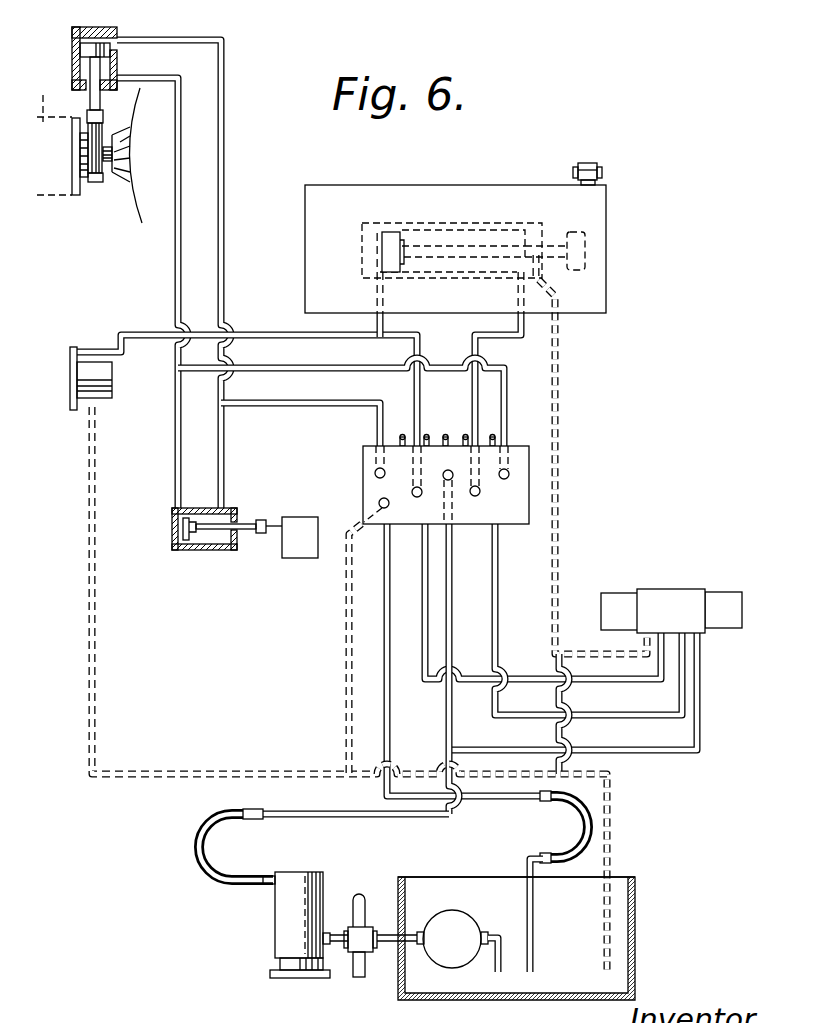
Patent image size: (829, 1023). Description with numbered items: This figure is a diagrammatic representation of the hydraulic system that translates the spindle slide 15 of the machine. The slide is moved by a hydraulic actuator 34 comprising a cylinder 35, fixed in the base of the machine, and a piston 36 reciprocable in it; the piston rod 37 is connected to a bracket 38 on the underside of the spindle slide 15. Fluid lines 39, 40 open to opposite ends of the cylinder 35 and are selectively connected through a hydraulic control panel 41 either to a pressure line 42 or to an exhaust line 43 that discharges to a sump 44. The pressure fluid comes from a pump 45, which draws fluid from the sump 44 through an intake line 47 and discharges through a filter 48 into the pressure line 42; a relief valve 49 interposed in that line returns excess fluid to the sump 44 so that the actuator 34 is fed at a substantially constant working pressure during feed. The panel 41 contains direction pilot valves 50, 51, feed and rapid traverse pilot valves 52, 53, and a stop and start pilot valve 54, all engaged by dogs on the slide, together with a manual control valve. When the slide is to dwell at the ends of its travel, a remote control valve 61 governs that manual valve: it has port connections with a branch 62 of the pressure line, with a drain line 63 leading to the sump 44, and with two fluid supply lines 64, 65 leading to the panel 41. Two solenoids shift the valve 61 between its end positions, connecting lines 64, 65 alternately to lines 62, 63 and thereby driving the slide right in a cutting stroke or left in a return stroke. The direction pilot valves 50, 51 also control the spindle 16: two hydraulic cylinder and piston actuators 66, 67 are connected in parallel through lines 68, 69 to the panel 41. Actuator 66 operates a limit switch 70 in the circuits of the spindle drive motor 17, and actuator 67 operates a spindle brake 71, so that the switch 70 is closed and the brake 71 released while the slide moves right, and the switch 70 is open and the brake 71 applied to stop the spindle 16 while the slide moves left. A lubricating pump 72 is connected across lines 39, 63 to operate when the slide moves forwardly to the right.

The spindle slide 15 is at (470, 200).
The spindle 16 is at (53, 138).
The spindle drive motor 17 is at (131, 200).
The hydraulic actuator 34 is at (438, 219).
The cylinder 35 is at (402, 232).
The piston 36 is at (385, 228).
The piston rod 37 is at (547, 243).
The bracket 38 is at (588, 249).
The fluid line 39 is at (413, 384).
The fluid line 40 is at (477, 402).
The hydraulic control panel 41 is at (535, 476).
The pressure line 42 is at (452, 632).
The exhaust line 43 is at (388, 724).
The sump 44 is at (636, 933).
The pump 45 is at (460, 924).
The intake line 47 is at (493, 968).
The filter 48 is at (312, 874).
The relief valve 49 is at (360, 893).
The direction pilot valve 50 is at (403, 434).
The direction pilot valve 51 is at (497, 434).
The feed and rapid traverse pilot valve 52 is at (427, 434).
The feed and rapid traverse pilot valve 53 is at (465, 434).
The stop and start pilot valve 54 is at (445, 434).
The remote control valve 61 is at (673, 587).
The branch of the pressure line 62 is at (702, 706).
The drain line 63 is at (553, 600).
The fluid supply line 64 is at (421, 632).
The fluid supply line 65 is at (490, 592).
The hydraulic cylinder and piston actuator 66 is at (242, 505).
The hydraulic cylinder and piston actuator 67 is at (124, 29).
The line 68 is at (176, 435).
The line 69 is at (224, 436).
The limit switch 70 is at (304, 516).
The spindle brake 71 is at (91, 190).
The lubricating pump 72 is at (112, 384).